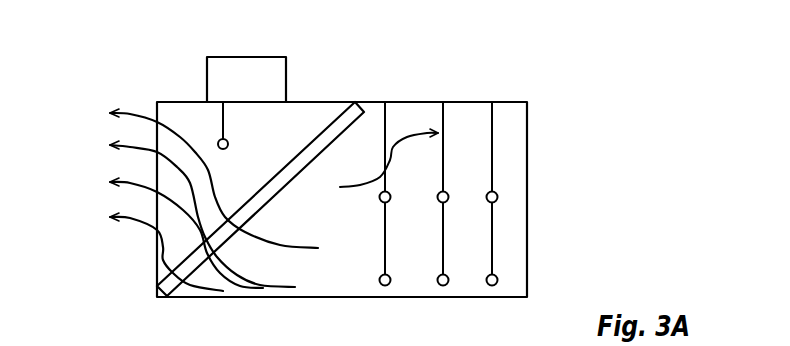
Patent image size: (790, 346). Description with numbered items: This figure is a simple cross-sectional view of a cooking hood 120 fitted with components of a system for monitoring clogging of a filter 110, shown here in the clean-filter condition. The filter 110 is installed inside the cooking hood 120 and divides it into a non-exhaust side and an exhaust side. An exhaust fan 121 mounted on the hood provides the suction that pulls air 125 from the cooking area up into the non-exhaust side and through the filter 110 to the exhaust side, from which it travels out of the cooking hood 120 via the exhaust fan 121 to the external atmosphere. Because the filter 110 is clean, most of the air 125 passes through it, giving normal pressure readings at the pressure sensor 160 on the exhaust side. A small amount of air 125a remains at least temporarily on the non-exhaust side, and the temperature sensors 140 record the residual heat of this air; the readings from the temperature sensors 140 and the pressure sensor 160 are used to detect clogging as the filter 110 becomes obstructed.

The filter 110 is at (318, 136).
The cooking hood 120 is at (527, 132).
The exhaust fan 121 is at (248, 56).
The air 125 is at (118, 217).
The air remaining in the non-exhaust side 125a is at (393, 140).
The temperature sensors 140 is at (497, 197).
The pressure sensor 160 is at (218, 143).